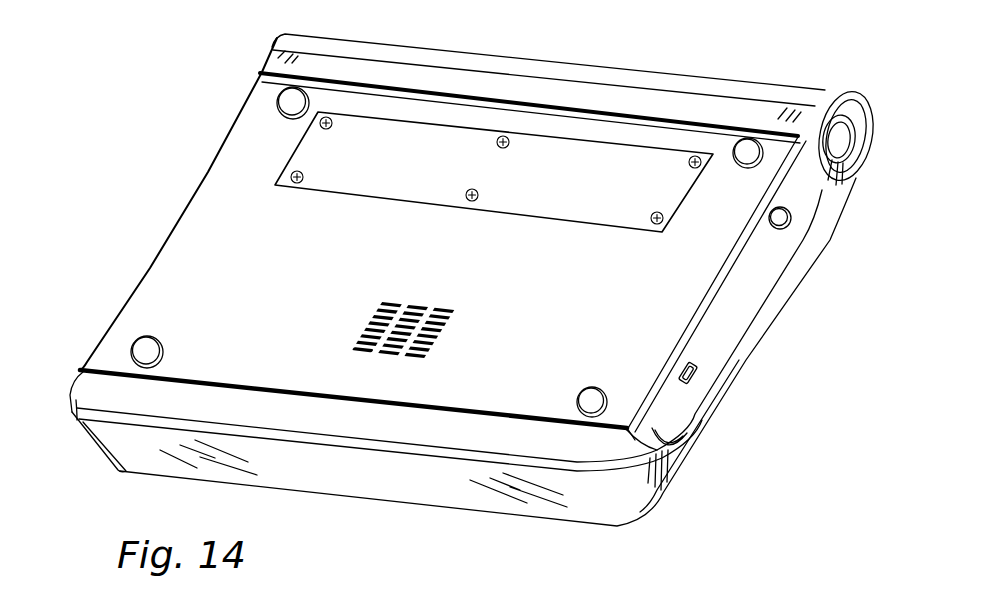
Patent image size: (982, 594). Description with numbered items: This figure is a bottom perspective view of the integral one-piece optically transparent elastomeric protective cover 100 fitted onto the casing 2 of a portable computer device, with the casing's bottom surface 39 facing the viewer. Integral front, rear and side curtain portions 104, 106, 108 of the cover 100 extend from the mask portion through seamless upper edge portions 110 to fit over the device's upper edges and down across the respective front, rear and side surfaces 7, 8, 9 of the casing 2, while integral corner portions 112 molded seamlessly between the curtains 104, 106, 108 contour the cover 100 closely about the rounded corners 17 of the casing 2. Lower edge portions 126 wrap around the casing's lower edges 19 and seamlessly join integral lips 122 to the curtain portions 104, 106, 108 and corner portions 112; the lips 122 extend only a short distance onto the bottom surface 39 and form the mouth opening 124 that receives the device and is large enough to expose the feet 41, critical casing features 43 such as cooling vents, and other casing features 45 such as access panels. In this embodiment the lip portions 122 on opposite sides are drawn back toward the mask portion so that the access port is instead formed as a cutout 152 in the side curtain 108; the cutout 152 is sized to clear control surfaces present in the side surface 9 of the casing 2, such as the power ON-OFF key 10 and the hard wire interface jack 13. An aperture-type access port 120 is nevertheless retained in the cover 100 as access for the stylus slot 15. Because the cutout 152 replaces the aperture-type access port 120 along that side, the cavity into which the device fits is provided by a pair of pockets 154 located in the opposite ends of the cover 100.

The protective cover 100 is at (760, 53).
The casing 2 is at (183, 243).
The front surface 7 is at (198, 472).
The rear surface 8 is at (590, 63).
The side surface 9 is at (762, 263).
The power ON-OFF key 10 is at (783, 222).
The hard wire interface jack 13 is at (693, 383).
The slot 15 is at (832, 150).
The corner 17 is at (642, 497).
The lower edge 19 is at (313, 428).
The bottom surface 39 is at (524, 351).
The feet 41 is at (285, 118).
The casing features 43 is at (340, 302).
The casing features 45 is at (382, 197).
The front curtain portion 104 is at (513, 505).
The rear curtain portion 106 is at (863, 107).
The side curtain portion 108 is at (258, 82).
The upper edge portion 110 is at (135, 478).
The corner portion 112 is at (580, 530).
The access port 120 is at (835, 186).
The lip 122 is at (482, 88).
The mouth opening 124 is at (270, 94).
The lower edge portion 126 is at (278, 50).
The cutout 152 is at (673, 430).
The pocket 154 is at (442, 108).